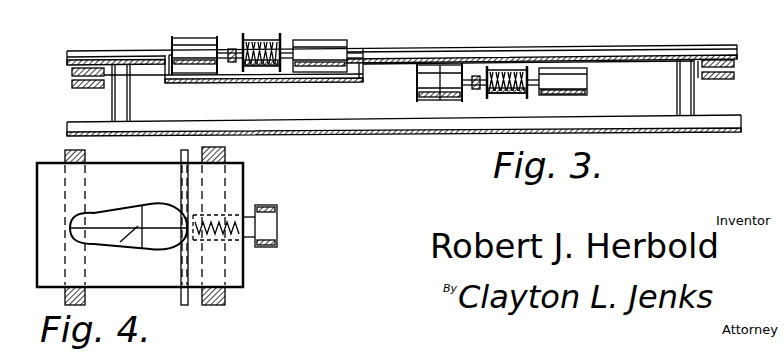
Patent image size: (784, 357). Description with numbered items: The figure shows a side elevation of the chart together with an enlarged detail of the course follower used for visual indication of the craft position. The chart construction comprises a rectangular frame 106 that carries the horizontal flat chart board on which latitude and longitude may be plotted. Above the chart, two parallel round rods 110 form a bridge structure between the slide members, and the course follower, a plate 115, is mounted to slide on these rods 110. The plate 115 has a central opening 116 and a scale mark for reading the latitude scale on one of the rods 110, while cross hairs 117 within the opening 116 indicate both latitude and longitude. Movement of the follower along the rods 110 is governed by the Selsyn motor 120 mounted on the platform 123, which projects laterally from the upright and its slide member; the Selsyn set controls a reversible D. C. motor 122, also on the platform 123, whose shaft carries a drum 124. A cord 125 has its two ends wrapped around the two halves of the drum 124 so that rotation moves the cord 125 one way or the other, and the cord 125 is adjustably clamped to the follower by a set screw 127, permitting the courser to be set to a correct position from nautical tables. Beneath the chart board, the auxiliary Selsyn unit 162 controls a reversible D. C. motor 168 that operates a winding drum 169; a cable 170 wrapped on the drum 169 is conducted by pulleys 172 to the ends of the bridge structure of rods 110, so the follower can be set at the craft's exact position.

In FIG. 3, the rectangular frame 106 is at (640, 41).
In FIG. 3, the Selsyn motor 120 is at (197, 38).
In FIG. 3, the reversible D. C. motor 122 is at (330, 30).
In FIG. 3, the platform 123 is at (300, 83).
In FIG. 3, the drum 124 is at (259, 40).
In FIG. 3, the auxiliary Selsyn unit 162 is at (417, 88).
In FIG. 3, the reversible D. C. motor 168 is at (587, 85).
In FIG. 3, the winding drum 169 is at (500, 94).
In FIG. 3, the cable 170 is at (700, 72).
In FIG. 3, the pulleys 172 is at (735, 74).
In FIG. 4, the round rods 110 is at (85, 156).
In FIG. 4, the plate 115 is at (243, 178).
In FIG. 4, the central opening 116 is at (135, 201).
In FIG. 4, the cross hairs 117 is at (126, 238).
In FIG. 4, the cord 125 is at (181, 158).
In FIG. 4, the set screw 127 is at (270, 219).